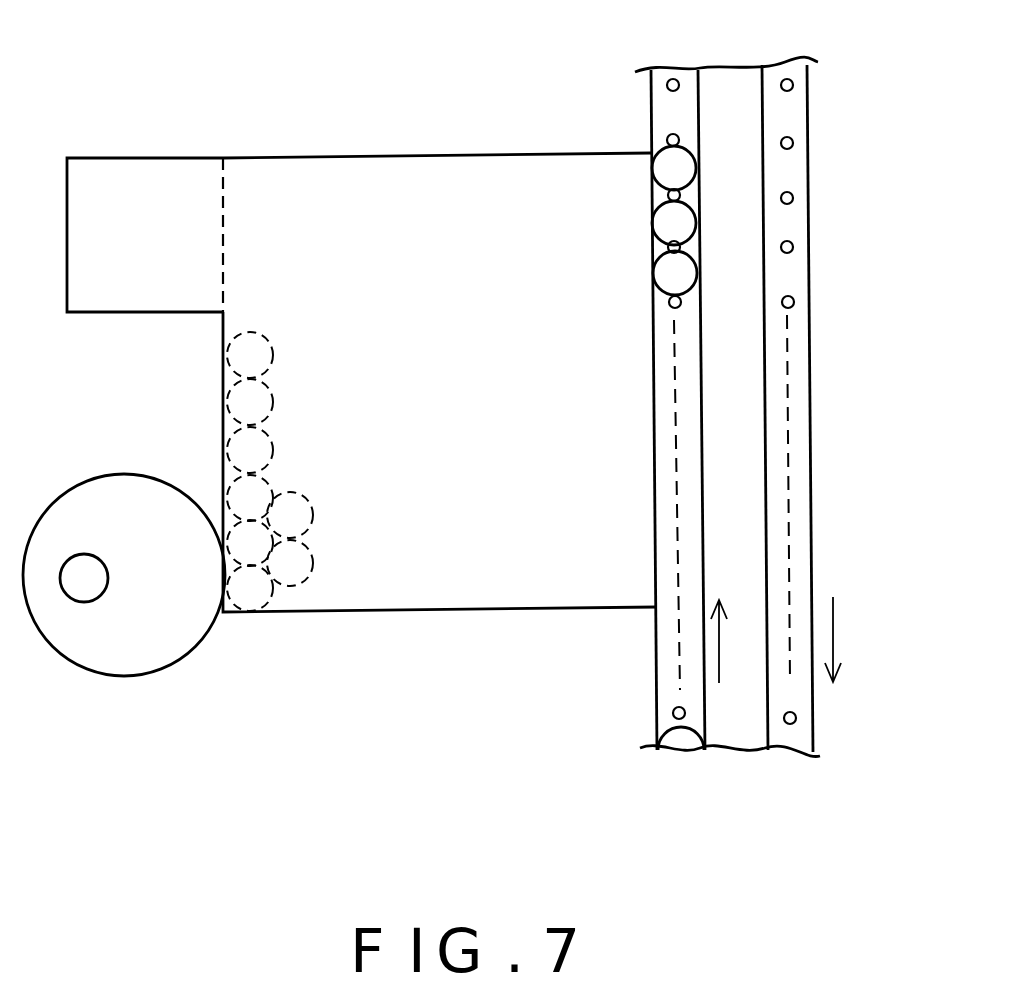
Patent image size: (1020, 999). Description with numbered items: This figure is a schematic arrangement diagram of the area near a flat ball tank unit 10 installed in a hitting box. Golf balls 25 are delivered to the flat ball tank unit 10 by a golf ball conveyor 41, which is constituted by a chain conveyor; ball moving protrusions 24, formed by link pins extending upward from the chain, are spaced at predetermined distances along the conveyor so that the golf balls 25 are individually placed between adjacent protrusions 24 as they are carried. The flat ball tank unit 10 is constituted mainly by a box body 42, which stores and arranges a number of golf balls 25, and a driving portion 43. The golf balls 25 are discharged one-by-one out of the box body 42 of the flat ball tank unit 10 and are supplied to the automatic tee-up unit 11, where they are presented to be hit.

The flat ball tank unit 10 is at (429, 153).
The automatic tee-up unit 11 is at (130, 660).
The ball moving protrusion 24 is at (793, 247).
The golf ball 25 is at (663, 170).
The golf ball conveyor 41 is at (688, 382).
The box body 42 is at (342, 195).
The driving portion 43 is at (130, 180).